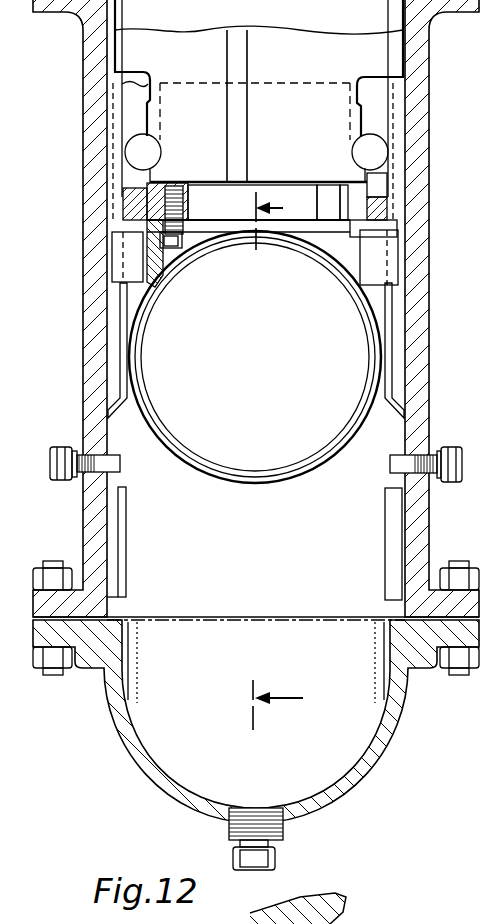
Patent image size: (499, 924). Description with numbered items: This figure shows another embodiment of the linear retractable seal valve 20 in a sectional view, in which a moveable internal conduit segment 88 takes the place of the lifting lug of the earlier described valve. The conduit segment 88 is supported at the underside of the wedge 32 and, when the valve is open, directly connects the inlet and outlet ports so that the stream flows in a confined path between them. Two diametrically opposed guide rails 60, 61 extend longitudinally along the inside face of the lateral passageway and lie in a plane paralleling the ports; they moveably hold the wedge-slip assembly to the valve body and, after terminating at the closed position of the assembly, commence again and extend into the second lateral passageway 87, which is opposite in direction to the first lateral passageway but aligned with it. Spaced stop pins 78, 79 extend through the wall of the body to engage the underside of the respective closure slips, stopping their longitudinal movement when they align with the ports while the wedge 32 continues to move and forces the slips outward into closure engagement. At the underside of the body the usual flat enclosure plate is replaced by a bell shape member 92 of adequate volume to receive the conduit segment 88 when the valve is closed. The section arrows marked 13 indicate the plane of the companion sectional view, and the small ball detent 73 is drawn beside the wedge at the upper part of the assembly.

The linear retractable seal valve 20 is at (83, 350).
The wedge 32 is at (336, 134).
The ball detent 73 is at (127, 153).
The conduit segment 88 is at (312, 462).
The guide rail 60 is at (115, 376).
The guide rail 61 is at (397, 375).
The stop pin 78 is at (72, 479).
The stop pin 79 is at (463, 463).
The second lateral passageway 87 is at (172, 603).
The bell shape member 92 is at (150, 773).
The section line 13- 13 is at (289, 458).